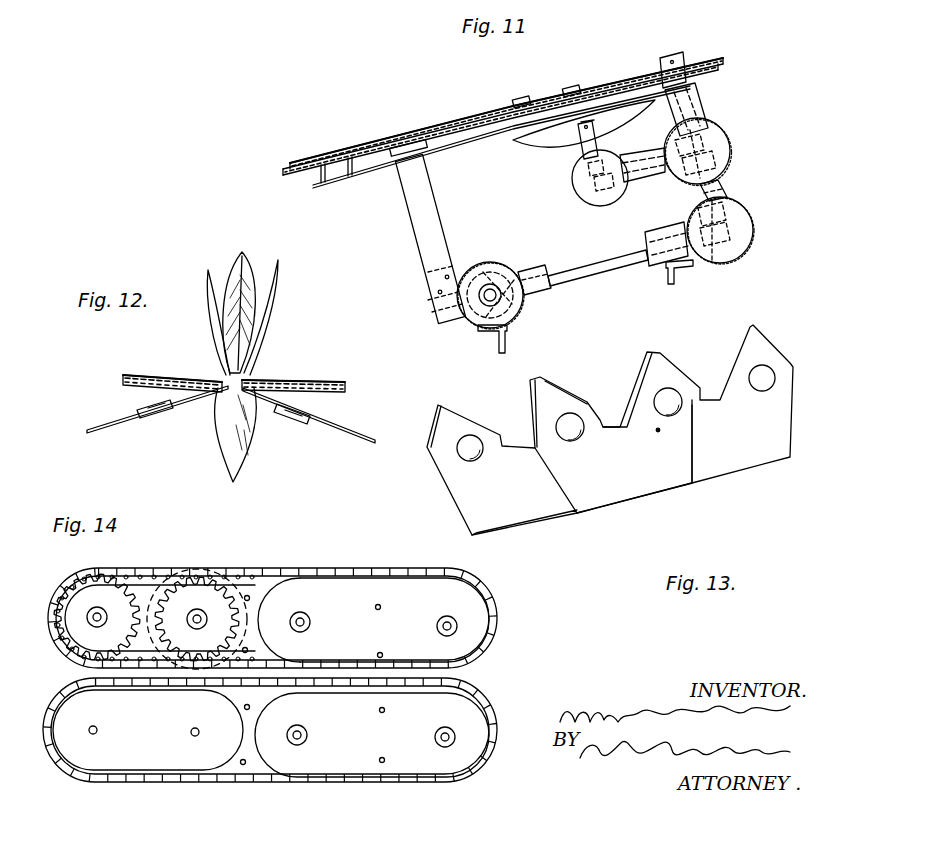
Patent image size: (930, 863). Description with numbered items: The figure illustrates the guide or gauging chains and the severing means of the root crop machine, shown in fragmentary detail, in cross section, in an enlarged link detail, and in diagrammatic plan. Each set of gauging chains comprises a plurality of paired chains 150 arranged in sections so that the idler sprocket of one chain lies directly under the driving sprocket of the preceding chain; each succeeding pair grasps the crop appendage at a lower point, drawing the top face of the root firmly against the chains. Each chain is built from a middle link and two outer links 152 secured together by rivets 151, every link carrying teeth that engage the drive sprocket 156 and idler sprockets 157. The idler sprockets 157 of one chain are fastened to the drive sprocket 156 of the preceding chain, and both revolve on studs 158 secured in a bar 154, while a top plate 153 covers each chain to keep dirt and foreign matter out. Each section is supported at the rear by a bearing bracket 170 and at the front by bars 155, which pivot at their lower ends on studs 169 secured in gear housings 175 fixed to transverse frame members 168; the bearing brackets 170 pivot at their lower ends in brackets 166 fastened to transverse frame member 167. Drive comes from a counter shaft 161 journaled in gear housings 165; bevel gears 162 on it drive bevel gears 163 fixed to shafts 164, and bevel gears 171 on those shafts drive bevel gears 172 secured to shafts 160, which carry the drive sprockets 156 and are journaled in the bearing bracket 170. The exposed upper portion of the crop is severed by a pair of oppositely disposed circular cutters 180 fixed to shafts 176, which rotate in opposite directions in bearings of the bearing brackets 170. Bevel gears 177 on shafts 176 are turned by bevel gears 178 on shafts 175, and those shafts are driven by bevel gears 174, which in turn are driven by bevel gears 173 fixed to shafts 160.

In FIG. 11, the gauging chains 150 is at (283, 171).
In FIG. 12, the gauging chains 150 is at (346, 390).
In FIG. 13, the gauging chains 150 is at (537, 508).
In FIG. 14, the gauging chains 150 is at (492, 641).
In FIG. 13, the rivets 151 is at (672, 398).
In FIG. 13, the outer links 152 is at (665, 482).
In FIG. 11, the top plate 153 is at (330, 154).
In FIG. 12, the top plate 153 is at (273, 378).
In FIG. 14, the top plate 153 is at (462, 603).
In FIG. 11, the bar 154 is at (368, 173).
In FIG. 11, the bars 155 is at (413, 256).
In FIG. 11, the drive sprocket 156 is at (685, 58).
In FIG. 14, the drive sprocket 156 is at (196, 596).
In FIG. 14, the idler sprockets 157 is at (94, 592).
In FIG. 14, the studs 158 is at (258, 588).
In FIG. 11, the shaft 160 is at (712, 132).
In FIG. 14, the shaft 160 is at (446, 616).
In FIG. 11, the counter shaft 161 is at (492, 290).
In FIG. 11, the bevel gears 162 is at (510, 250).
In FIG. 11, the bevel gears 163 is at (530, 264).
In FIG. 11, the shafts 164 is at (578, 268).
In FIG. 11, the gear housings 165 is at (519, 324).
In FIG. 11, the brackets 166 is at (660, 276).
In FIG. 11, the transverse frame member 167 is at (698, 280).
In FIG. 11, the transverse frame members 168 is at (482, 334).
In FIG. 11, the studs 169 is at (432, 311).
In FIG. 11, the bearing bracket 170 is at (748, 214).
In FIG. 11, the bevel gears 171 is at (740, 238).
In FIG. 11, the bevel gears 172 is at (735, 200).
In FIG. 11, the bevel gears 173 is at (735, 158).
In FIG. 11, the bevel gears 174 is at (722, 145).
In FIG. 11, the shafts 175 is at (663, 180).
In FIG. 11, the shafts 176 is at (568, 153).
In FIG. 11, the bevel gears 177 is at (605, 158).
In FIG. 11, the bevel gears 178 is at (612, 166).
In FIG. 11, the circular cutters 180 is at (530, 146).
In FIG. 12, the circular cutters 180 is at (125, 431).